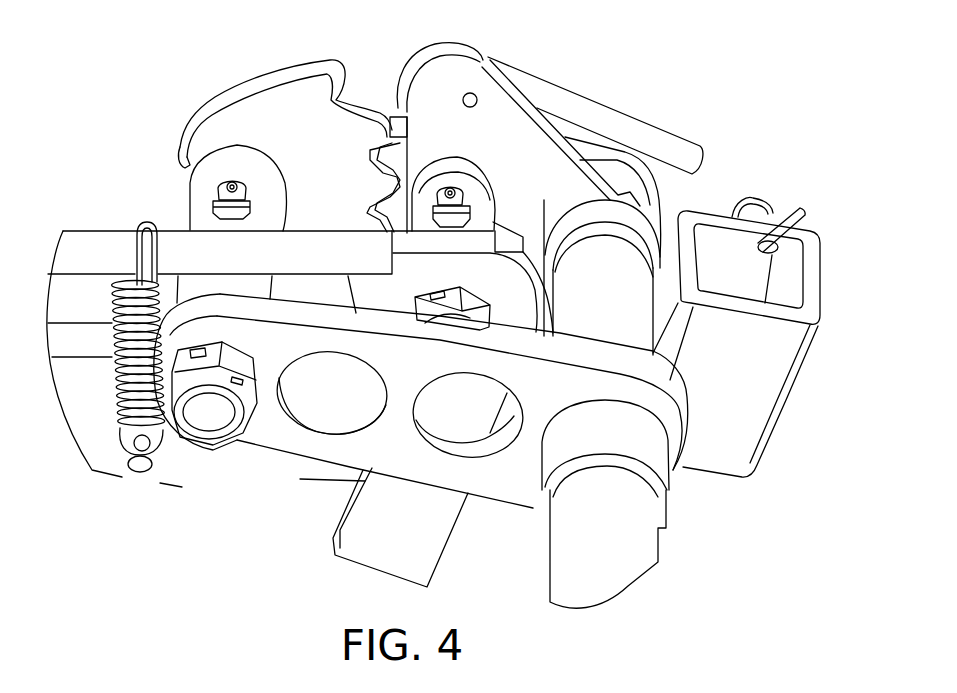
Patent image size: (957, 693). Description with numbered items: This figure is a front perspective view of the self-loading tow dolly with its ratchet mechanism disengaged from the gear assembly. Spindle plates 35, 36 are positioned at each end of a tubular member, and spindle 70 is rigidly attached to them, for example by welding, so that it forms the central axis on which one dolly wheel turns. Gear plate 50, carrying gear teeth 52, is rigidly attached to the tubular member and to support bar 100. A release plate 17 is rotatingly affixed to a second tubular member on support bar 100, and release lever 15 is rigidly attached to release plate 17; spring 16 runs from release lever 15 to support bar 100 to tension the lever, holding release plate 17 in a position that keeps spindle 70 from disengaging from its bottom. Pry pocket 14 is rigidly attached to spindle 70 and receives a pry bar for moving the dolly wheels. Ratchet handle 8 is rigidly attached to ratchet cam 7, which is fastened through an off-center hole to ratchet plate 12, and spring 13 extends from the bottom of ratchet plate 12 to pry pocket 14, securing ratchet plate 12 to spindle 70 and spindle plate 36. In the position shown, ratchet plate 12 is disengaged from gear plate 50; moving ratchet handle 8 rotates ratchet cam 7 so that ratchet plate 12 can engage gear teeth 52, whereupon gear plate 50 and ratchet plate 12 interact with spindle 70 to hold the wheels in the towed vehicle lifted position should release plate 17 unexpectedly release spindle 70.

The ratchet cam 7 is at (418, 53).
The ratchet handle 8 is at (630, 120).
The ratchet plate 12 is at (508, 112).
The spring 13 is at (753, 202).
The pry pocket 14 is at (757, 428).
The release lever 15 is at (115, 250).
The spring 16 is at (122, 407).
The release plate 17 is at (365, 528).
The spindle plate 35 is at (517, 475).
The spindle plate 36 is at (652, 198).
The gear plate 50 is at (250, 115).
The gear teeth 52 is at (333, 82).
The spindle 70 is at (663, 537).
The support bar 100 is at (239, 440).